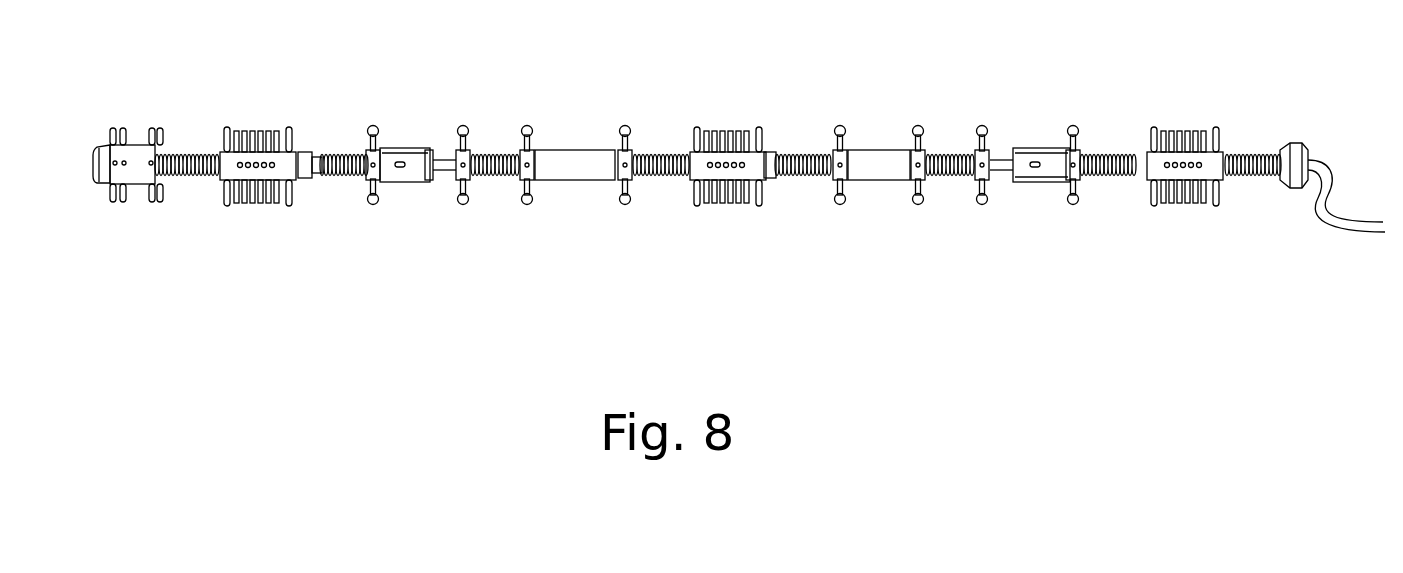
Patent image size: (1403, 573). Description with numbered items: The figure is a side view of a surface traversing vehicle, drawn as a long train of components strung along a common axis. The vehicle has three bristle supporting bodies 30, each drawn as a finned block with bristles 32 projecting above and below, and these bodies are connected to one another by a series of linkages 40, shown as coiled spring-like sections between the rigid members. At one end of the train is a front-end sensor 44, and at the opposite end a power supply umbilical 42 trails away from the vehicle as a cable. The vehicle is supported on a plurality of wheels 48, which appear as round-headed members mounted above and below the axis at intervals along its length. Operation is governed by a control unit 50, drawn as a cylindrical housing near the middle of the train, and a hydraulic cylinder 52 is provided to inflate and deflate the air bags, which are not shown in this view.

The bristle supporting body 30 is at (687, 183).
The fins 32 is at (720, 205).
The linkage 40 is at (332, 148).
The power supply umbilical 42 is at (1330, 232).
The front-end sensor 44 is at (135, 187).
The wheel 48 is at (837, 133).
The control unit 50 is at (577, 150).
The hydraulic cylinder 52 is at (400, 185).